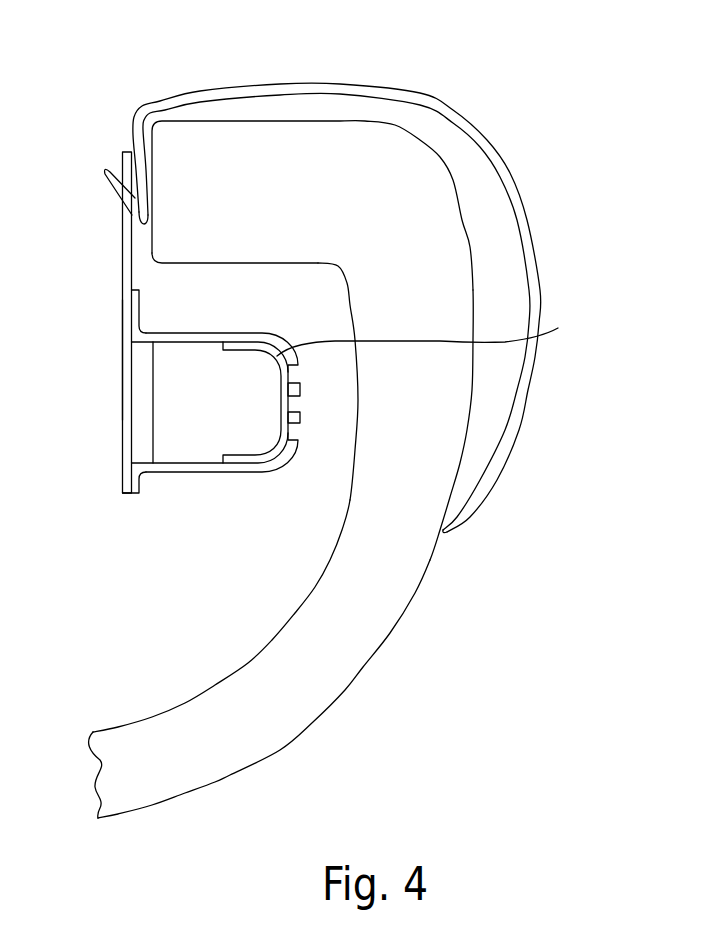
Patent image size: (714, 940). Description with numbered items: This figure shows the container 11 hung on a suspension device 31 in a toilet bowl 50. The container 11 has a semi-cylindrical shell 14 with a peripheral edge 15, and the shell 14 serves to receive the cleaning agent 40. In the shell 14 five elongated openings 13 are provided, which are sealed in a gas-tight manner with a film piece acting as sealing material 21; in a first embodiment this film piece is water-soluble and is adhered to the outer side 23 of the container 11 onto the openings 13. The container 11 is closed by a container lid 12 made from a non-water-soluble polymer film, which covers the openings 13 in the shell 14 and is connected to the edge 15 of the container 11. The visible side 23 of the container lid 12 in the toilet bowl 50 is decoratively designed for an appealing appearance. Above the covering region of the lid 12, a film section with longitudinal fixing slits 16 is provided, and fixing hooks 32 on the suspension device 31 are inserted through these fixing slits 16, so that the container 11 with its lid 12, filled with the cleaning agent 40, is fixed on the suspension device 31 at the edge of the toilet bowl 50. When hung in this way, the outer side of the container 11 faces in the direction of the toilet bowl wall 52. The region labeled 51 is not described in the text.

The container 11 is at (203, 328).
The container lid 12 is at (122, 408).
The elongated openings 13 is at (306, 431).
The semi-cylindrical shell 14 is at (202, 476).
The peripheral edge 15 is at (147, 314).
The fixing slits 16 is at (124, 225).
The sealing material 21 is at (435, 336).
The outer side 23 is at (119, 358).
The suspension device 31 is at (352, 88).
The fixing hooks 32 is at (104, 172).
The cleaning agent 40 is at (222, 409).
The toilet bowl 50 is at (396, 409).
The upper body portion 51 is at (219, 209).
The toilet bowl wall 52 is at (344, 490).